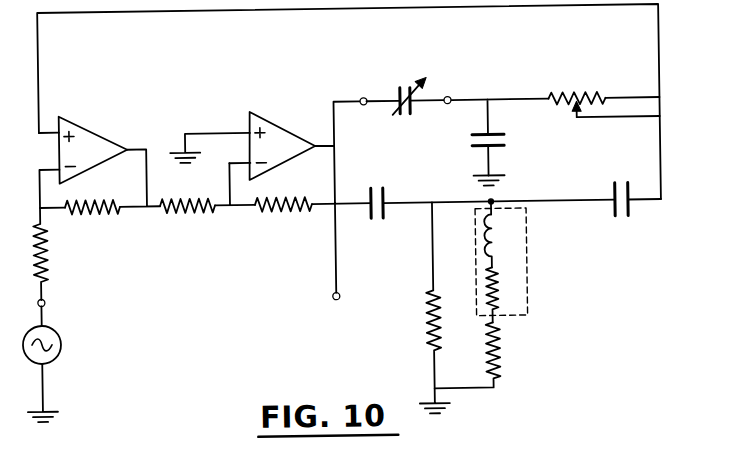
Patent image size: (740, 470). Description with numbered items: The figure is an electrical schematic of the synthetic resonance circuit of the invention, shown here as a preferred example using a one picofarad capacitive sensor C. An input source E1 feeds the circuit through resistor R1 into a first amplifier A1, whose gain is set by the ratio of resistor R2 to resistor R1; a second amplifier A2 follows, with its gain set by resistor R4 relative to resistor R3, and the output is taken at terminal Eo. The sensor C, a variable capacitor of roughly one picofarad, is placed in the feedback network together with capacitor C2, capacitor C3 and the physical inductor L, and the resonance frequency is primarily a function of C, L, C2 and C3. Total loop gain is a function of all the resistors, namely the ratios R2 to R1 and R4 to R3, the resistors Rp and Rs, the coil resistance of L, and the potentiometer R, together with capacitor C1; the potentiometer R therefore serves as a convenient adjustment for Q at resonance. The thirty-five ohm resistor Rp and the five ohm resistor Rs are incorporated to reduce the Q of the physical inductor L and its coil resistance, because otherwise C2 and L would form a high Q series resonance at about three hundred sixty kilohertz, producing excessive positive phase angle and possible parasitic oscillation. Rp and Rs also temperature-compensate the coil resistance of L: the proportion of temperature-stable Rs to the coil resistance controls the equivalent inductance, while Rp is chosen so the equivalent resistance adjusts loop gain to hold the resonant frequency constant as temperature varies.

The first operational amplifier A1 is at (92, 143).
The second operational amplifier A2 is at (242, 137).
The resistor R1 is at (72, 253).
The resistor R2 is at (104, 212).
The resistor R3 is at (191, 211).
The resistor R4 is at (279, 211).
The potentiometer R is at (574, 82).
The resistor Rp is at (418, 308).
The resistor Rs is at (512, 354).
The capacitive sensor C is at (406, 90).
The capacitor C1 is at (551, 157).
The capacitor C2 is at (386, 205).
The capacitor C3 is at (667, 192).
The physical inductor L is at (539, 259).
The input voltage source E1 is at (36, 359).
The output voltage terminal Eo is at (322, 260).